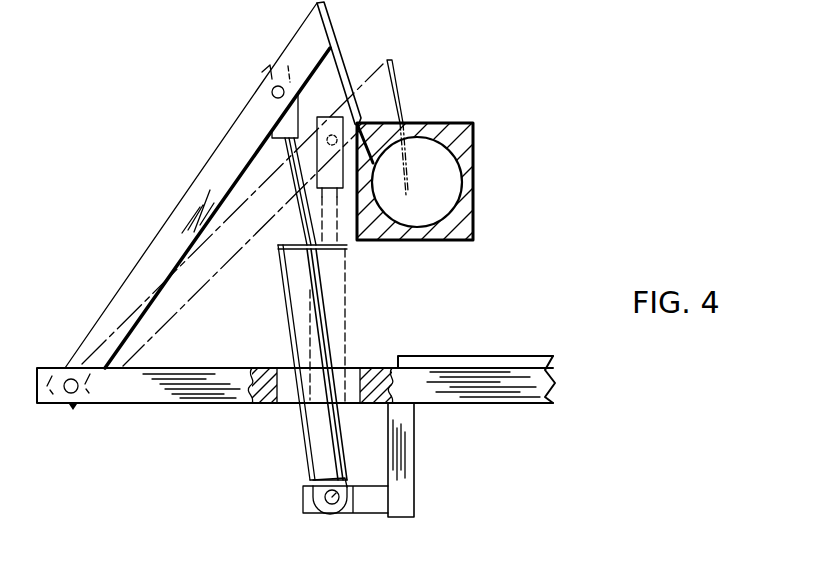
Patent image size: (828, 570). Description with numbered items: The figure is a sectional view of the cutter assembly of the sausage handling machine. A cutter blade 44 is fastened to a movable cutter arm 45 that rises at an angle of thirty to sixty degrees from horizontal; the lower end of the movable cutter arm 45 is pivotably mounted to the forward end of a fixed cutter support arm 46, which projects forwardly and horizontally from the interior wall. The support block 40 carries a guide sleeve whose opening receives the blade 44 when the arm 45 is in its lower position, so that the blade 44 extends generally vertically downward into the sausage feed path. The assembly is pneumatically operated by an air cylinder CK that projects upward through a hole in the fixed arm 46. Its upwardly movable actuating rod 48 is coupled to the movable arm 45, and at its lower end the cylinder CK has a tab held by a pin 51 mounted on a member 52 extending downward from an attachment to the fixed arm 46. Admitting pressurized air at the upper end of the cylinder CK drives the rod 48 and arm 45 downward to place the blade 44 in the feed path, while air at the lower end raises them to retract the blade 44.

The support block 40 is at (475, 168).
The cutter blade 44 is at (340, 56).
The movable cutter arm 45 is at (178, 192).
The fixed cutter support arm 46 is at (153, 405).
The actuating rod 48 is at (286, 241).
The pin 51 is at (332, 504).
The member 52 is at (375, 514).
The air cylinder CK is at (302, 438).